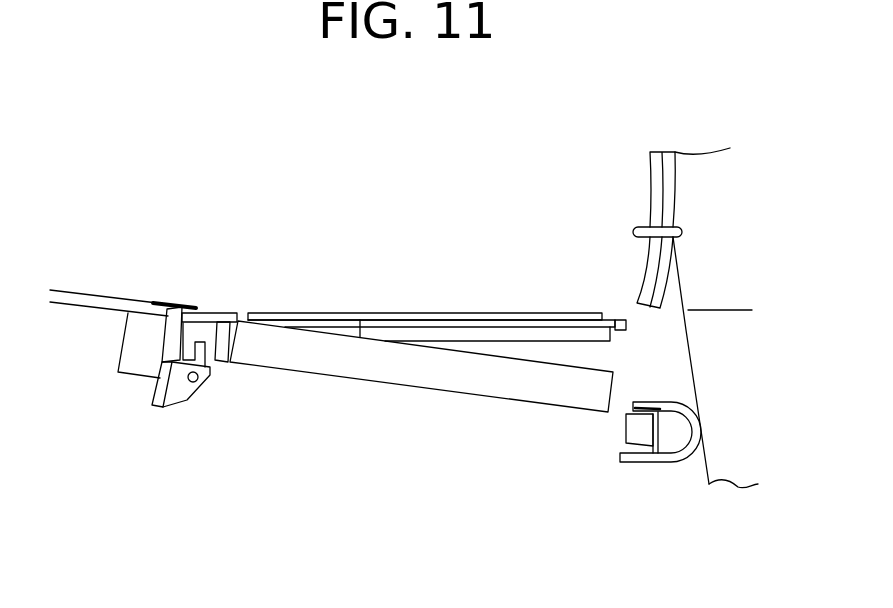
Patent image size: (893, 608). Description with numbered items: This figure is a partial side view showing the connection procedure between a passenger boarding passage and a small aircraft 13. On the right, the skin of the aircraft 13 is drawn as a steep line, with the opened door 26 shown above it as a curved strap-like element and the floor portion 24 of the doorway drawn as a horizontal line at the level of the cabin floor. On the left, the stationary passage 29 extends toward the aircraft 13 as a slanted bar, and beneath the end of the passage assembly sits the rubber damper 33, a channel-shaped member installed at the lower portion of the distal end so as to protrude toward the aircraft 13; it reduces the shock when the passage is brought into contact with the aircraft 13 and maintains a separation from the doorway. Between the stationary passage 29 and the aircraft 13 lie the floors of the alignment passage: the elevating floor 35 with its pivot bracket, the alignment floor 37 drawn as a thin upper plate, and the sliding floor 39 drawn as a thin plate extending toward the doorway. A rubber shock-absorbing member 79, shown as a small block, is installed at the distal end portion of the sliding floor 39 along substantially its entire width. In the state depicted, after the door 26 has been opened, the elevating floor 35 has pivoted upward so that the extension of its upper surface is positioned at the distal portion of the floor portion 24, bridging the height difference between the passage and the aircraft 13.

The aircraft 13 is at (707, 470).
The floor portion 24 is at (718, 308).
The door 26 is at (650, 185).
The stationary passage 29 is at (88, 295).
The rubber damper 33 is at (640, 467).
The elevating floor 35 is at (213, 308).
The alignment floor 37 is at (502, 310).
The sliding floor 39 is at (612, 310).
The rubber shock-absorbing member 79 is at (618, 331).